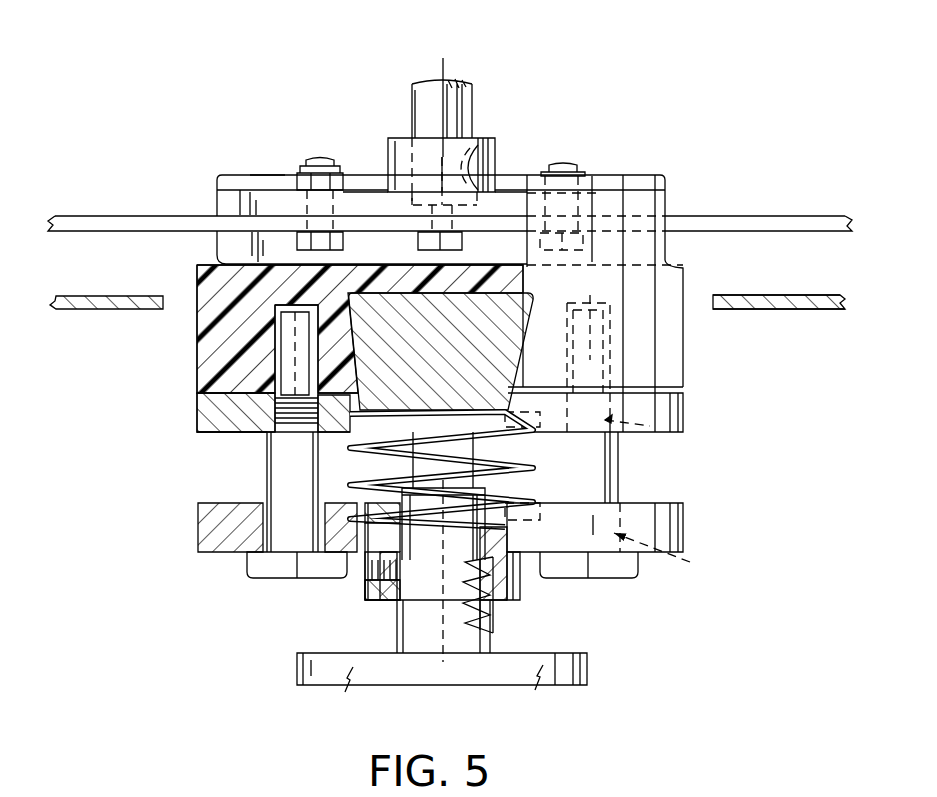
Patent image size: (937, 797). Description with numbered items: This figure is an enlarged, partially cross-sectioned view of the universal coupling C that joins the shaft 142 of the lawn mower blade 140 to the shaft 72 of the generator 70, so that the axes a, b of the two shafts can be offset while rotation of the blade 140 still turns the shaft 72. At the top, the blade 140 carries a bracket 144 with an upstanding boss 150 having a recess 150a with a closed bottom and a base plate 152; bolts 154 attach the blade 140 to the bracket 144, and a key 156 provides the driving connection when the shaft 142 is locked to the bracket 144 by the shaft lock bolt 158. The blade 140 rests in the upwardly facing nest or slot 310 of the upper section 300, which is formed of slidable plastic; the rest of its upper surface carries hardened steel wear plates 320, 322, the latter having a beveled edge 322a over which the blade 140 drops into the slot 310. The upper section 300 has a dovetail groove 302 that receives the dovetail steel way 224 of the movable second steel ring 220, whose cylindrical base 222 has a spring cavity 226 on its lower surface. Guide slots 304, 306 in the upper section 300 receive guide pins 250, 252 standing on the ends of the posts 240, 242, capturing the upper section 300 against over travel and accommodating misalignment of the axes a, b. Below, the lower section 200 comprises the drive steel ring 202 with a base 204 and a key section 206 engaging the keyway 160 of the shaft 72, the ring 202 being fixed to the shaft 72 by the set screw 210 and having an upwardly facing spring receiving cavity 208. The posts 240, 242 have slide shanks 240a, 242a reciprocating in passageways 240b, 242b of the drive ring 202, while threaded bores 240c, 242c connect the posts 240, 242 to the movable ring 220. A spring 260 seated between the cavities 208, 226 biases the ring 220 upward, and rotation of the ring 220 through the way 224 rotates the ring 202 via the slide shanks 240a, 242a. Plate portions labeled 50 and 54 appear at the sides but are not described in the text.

The blade 140 is at (807, 218).
The wear plate 322 is at (216, 171).
The beveled edge 322a is at (265, 176).
The nest or slot 310 is at (230, 203).
The base plate 152 is at (358, 200).
The wear plate 320 is at (651, 172).
The bolts 154 is at (313, 160).
The upstanding boss 150 is at (399, 143).
The bracket 144 is at (500, 142).
The key 156 is at (490, 128).
The shaft 142 is at (427, 90).
The axis a is at (444, 58).
The recess 150a is at (417, 204).
The shaft lock bolt 158 is at (461, 239).
The upper section 300 is at (194, 276).
The guide slot 304 is at (273, 305).
The guide pin 250 is at (288, 332).
The dovetail groove 302 is at (528, 340).
The dovetail way 224 is at (518, 305).
The guide slot 306 is at (610, 308).
The guide pin 252 is at (600, 362).
The plate edge 54 is at (709, 294).
The plate 50 is at (823, 308).
The universal coupling C is at (140, 376).
The cylindrical base 222 is at (213, 410).
The threaded bore 240c is at (311, 423).
The spring cavity 226 is at (360, 430).
The lower section 200 is at (178, 442).
The second steel ring 220 is at (688, 410).
The threaded bore 242c is at (688, 430).
The slide shank 242a is at (603, 465).
The spring 260 is at (533, 470).
The slide shank 240a is at (282, 510).
The passageway 240b is at (322, 520).
The post 240 is at (250, 576).
The spring receiving cavity 208 is at (365, 552).
The base 204 is at (368, 600).
The set screw 210 is at (383, 580).
The key section 206 is at (480, 567).
The key way 160 is at (500, 596).
The drive steel ring 202 is at (690, 533).
The passageway 242b is at (685, 558).
The post 242 is at (626, 578).
The shaft 72 is at (418, 642).
The axis b is at (444, 642).
The generator 70 is at (586, 670).